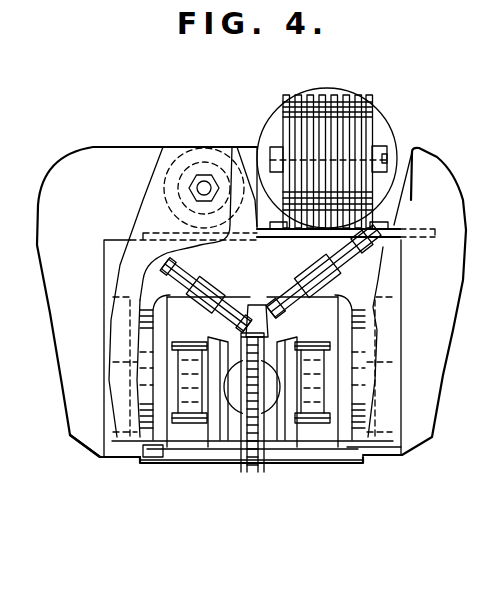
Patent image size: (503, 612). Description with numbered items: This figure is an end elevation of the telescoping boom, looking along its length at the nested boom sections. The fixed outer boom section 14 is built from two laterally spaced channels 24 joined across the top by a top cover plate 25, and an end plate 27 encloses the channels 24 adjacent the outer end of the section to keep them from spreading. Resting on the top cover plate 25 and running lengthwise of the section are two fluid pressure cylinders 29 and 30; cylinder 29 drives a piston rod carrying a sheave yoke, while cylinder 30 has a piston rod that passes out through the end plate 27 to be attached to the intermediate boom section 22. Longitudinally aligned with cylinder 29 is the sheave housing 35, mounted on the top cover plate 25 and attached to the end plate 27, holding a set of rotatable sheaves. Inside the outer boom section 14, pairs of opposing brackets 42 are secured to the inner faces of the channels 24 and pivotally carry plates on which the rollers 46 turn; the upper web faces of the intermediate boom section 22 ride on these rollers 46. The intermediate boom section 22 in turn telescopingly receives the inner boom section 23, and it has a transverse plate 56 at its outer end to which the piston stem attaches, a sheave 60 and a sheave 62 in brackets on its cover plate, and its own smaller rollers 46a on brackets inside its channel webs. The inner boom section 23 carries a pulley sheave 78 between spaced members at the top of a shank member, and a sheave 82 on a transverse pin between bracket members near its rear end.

The boom section 14 is at (110, 468).
The intermediate boom section 22 is at (149, 460).
The inner boom section 23 is at (304, 444).
The channels 24 is at (103, 265).
The top cover plate 25 is at (259, 239).
The end plate 27 is at (95, 147).
The fluid pressure cylinder 29 is at (388, 125).
The fluid pressure cylinder 30 is at (168, 152).
The sheave housing 35 is at (293, 130).
The brackets 42 is at (113, 407).
The rollers 46 is at (160, 442).
The rollers 46a is at (181, 431).
The plate 56 is at (143, 200).
The sheave 60 is at (205, 274).
The sheave 62 is at (297, 274).
The pulley sheave 78 is at (247, 477).
The sheave 82 is at (257, 302).